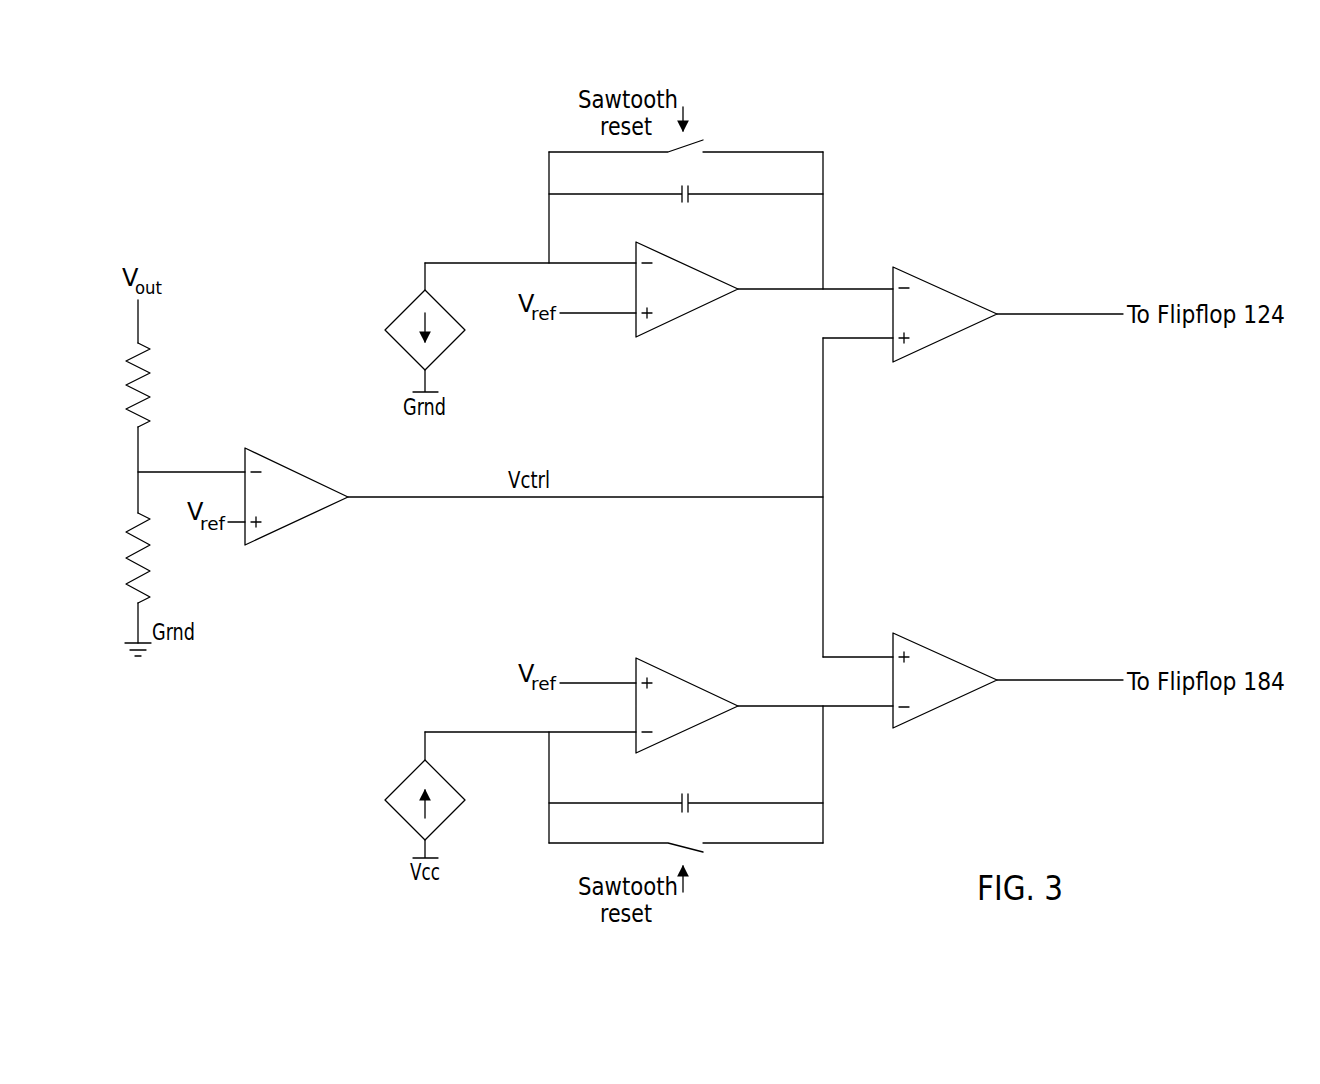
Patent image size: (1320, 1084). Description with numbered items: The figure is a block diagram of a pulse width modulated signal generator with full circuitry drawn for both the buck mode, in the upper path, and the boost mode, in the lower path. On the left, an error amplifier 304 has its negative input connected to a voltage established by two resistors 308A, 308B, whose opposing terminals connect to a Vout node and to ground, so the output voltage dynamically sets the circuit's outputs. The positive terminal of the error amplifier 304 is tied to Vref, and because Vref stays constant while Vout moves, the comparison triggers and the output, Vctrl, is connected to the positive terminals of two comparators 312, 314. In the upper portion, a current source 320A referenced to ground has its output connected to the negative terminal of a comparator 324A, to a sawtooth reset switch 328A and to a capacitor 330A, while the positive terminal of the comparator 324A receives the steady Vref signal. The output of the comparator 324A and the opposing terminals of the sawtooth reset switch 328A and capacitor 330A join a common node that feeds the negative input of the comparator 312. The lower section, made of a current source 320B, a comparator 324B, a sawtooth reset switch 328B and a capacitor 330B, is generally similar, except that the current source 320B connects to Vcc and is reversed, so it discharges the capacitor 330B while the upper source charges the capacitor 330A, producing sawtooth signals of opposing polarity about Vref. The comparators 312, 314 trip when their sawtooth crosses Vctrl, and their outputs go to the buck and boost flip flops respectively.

The error amplifier 304 is at (302, 522).
The resistor 308A is at (147, 375).
The resistor 308B is at (147, 565).
The comparator 312 is at (946, 288).
The comparator 314 is at (946, 657).
The current source 320A is at (447, 351).
The current source 320B is at (447, 818).
The comparator 324A is at (686, 312).
The comparator 324B is at (686, 678).
The sawtooth reset switch 328A is at (718, 129).
The sawtooth reset switch 328B is at (710, 848).
The capacitor 330A is at (688, 197).
The capacitor 330B is at (688, 800).